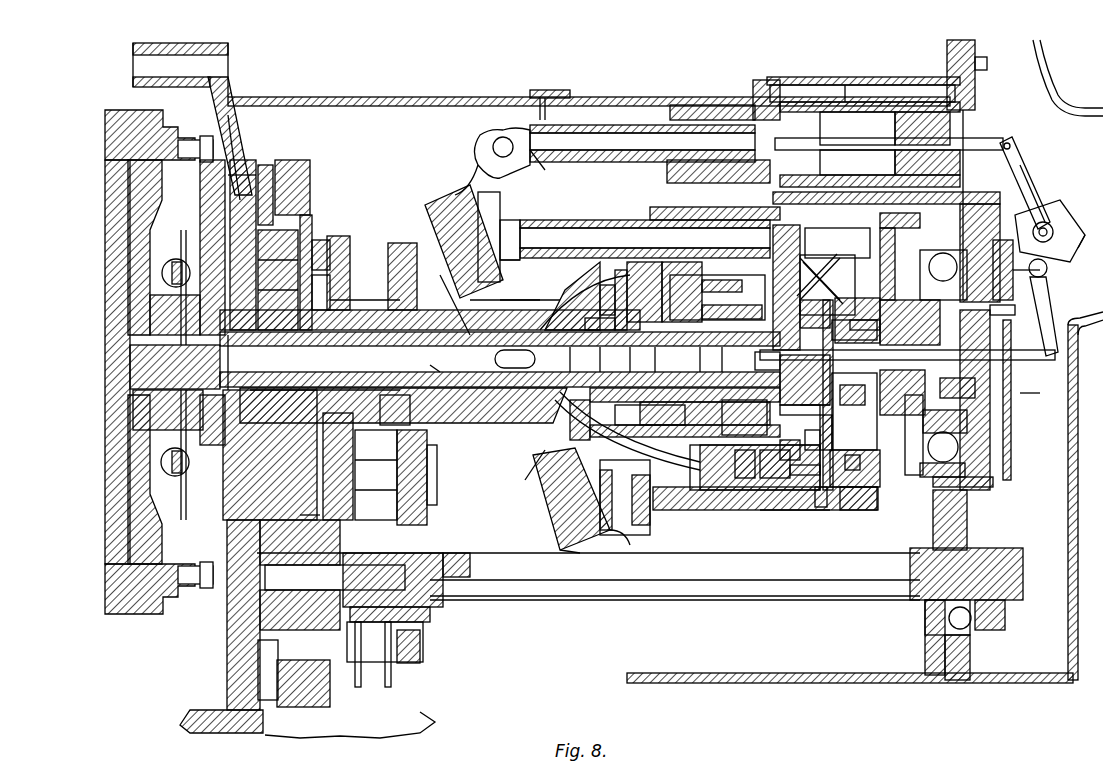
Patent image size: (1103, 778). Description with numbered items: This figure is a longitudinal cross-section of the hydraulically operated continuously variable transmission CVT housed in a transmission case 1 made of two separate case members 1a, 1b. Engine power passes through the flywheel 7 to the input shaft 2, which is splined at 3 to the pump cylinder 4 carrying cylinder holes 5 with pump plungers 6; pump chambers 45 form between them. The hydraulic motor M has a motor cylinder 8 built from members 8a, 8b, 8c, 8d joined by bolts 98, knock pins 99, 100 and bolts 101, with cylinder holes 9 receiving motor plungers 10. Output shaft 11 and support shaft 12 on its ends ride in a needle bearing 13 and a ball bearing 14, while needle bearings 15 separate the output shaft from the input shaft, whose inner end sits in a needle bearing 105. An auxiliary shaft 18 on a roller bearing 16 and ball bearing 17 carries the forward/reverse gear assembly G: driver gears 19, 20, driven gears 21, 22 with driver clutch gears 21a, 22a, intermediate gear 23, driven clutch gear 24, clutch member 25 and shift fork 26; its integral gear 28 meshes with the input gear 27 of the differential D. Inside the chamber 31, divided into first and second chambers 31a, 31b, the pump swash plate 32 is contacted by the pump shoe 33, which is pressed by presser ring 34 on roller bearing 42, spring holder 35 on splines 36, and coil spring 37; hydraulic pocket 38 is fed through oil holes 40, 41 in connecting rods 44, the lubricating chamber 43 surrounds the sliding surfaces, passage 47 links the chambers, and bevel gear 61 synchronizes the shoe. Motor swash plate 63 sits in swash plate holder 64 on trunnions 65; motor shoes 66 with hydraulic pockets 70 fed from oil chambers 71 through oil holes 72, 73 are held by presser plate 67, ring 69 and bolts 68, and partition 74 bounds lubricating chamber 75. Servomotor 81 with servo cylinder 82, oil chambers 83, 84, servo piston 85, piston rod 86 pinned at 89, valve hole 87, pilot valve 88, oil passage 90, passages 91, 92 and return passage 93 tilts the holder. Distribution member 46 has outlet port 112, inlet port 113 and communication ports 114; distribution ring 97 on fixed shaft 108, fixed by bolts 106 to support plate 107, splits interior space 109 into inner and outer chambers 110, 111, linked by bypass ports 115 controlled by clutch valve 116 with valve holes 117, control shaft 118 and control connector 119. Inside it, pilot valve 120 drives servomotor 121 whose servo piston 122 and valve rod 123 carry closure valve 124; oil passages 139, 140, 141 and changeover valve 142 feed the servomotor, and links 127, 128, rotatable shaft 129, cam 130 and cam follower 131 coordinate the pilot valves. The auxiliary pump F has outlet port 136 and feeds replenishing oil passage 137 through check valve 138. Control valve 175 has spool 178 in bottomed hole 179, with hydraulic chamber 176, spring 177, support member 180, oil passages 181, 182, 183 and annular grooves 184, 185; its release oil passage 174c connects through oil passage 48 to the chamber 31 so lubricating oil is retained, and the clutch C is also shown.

The transmission case 1 is at (565, 80).
The case member 1a is at (522, 92).
The case member 1b is at (559, 92).
The input shaft 2 is at (384, 352).
The splines 3 is at (685, 390).
The pump cylinder 4 is at (719, 359).
The cylinder holes 5 is at (764, 462).
The pump plungers 6 is at (643, 425).
The flywheel 7 is at (132, 516).
The motor cylinder 8 is at (690, 510).
The first member 8a is at (585, 295).
The second member 8b is at (715, 203).
The third member 8c is at (795, 512).
The fourth member 8d is at (866, 512).
The cylinder holes 9 is at (842, 190).
The motor plungers 10 is at (575, 222).
The output shaft 11 is at (466, 412).
The support shaft 12 is at (1004, 270).
The needle bearing 13 is at (288, 455).
The ball bearing 14 is at (928, 445).
The needle bearings 15 is at (325, 386).
The roller bearing 16 is at (332, 575).
The ball bearing 17 is at (945, 618).
The auxiliary shaft 18 is at (675, 578).
The driver gear 19 is at (345, 237).
The driver gear 20 is at (398, 242).
The driven gear 21 is at (335, 690).
The driver clutch gear 21a is at (380, 605).
The driven gear 22 is at (420, 663).
The driver clutch gear 22a is at (423, 637).
The intermediate gear 23 is at (430, 470).
The driven clutch gear 24 is at (406, 580).
The clutch member 25 is at (372, 515).
The shift fork 26 is at (390, 685).
The input gear 27 is at (262, 667).
The integral gear 28 is at (289, 499).
The chamber 31 is at (625, 497).
The first chamber 31a is at (597, 300).
The second chamber 31b is at (672, 262).
The pump swash plate 32 is at (599, 297).
The pump shoe 33 is at (622, 429).
The presser ring 34 is at (598, 359).
The spring holder 35 is at (594, 318).
The splines 36 is at (628, 359).
The coil spring 37 is at (700, 358).
The hydraulic pocket 38 is at (568, 359).
The oil hole 40 is at (728, 463).
The oil hole 41 is at (744, 417).
The roller bearing 42 is at (570, 438).
The lubricating chamber 43 is at (635, 262).
The connecting rods 44 is at (717, 305).
The pump chambers 45 is at (787, 443).
The distribution member 46 is at (820, 269).
The passage 47 is at (655, 357).
The oil passage 48 is at (443, 359).
The bevel gear 61 is at (750, 466).
The motor swash plate 63 is at (548, 518).
The swash plate holder 64 is at (560, 548).
The trunnions 65 is at (509, 357).
The motor shoes 66 is at (514, 269).
The presser plate 67 is at (527, 307).
The bolts 68 is at (488, 205).
The ring 69 is at (620, 542).
The hydraulic pocket 70 is at (440, 222).
The oil chambers 71 is at (837, 239).
The oil hole 72 is at (514, 228).
The oil hole 73 is at (444, 305).
The cylindrical partition 74 is at (498, 307).
The lubricating chamber 75 is at (571, 499).
The servomotor 81 is at (818, 90).
The servo cylinder 82 is at (848, 79).
The lefthand oil chamber 83 is at (766, 90).
The righthand oil chamber 84 is at (865, 98).
The servo piston 85 is at (857, 162).
The piston rod 86 is at (625, 130).
The valve hole 87 is at (695, 110).
The pilot valve 88 is at (889, 131).
The pin 89 is at (497, 140).
The oil passage 90 is at (927, 162).
The passage 91 is at (873, 244).
The passage 92 is at (733, 120).
The return passage 93 is at (544, 169).
The distribution ring 97 is at (854, 310).
The bolts 98 is at (765, 497).
The knock pin 99 is at (801, 462).
The knock pin 100 is at (858, 457).
The bolts 101 is at (824, 508).
The needle bearing 105 is at (797, 394).
The bolts 106 is at (985, 64).
The support plate 107 is at (1011, 407).
The fixed shaft 108 is at (924, 275).
The interior space 109 is at (900, 256).
The inner chamber 110 is at (813, 438).
The outer chamber 111 is at (850, 430).
The outlet port 112 is at (807, 331).
The inlet port 113 is at (818, 399).
The communication ports 114 is at (791, 287).
The bypass ports 115 is at (871, 312).
The clutch valve 116 is at (912, 322).
The valve holes 117 is at (924, 421).
The control shaft 118 is at (968, 511).
The control connector 119 is at (990, 423).
The pilot valve 120 is at (1048, 360).
The servomotor 121 is at (906, 435).
The servo piston 122 is at (927, 392).
The valve rod 123 is at (861, 311).
The closure valve 124 is at (856, 388).
The link 127 is at (1022, 170).
The link 128 is at (1046, 296).
The rotatable shaft 129 is at (1052, 226).
The cam 130 is at (1088, 239).
The cam follower 131 is at (1048, 268).
The outlet port 136 is at (175, 365).
The replenishing oil passage 137 is at (330, 268).
The check valve 138 is at (766, 357).
The oil passage 139 is at (1018, 274).
The oil passage 140 is at (1042, 389).
The oil passage 141 is at (1039, 191).
The changeover valve 142 is at (1010, 304).
The release oil passage 174c is at (318, 238).
The control valve 175 is at (300, 185).
The hydraulic chamber 176 is at (430, 338).
The spring 177 is at (298, 175).
The spool 178 is at (285, 263).
The bottomed hole 179 is at (243, 165).
The support member 180 is at (266, 166).
The oil passage 181 is at (237, 362).
The oil passage 182 is at (216, 302).
The oil passage 183 is at (245, 185).
The annular groove 184 is at (331, 260).
The annular groove 185 is at (228, 188).
The auxiliary pump F is at (188, 245).
The forward/reverse gear assembly G is at (428, 488).
The differential D is at (351, 719).
The hydraulic motor M is at (662, 210).
The clutch C is at (827, 282).
The continuously variable transmission CVT is at (735, 512).